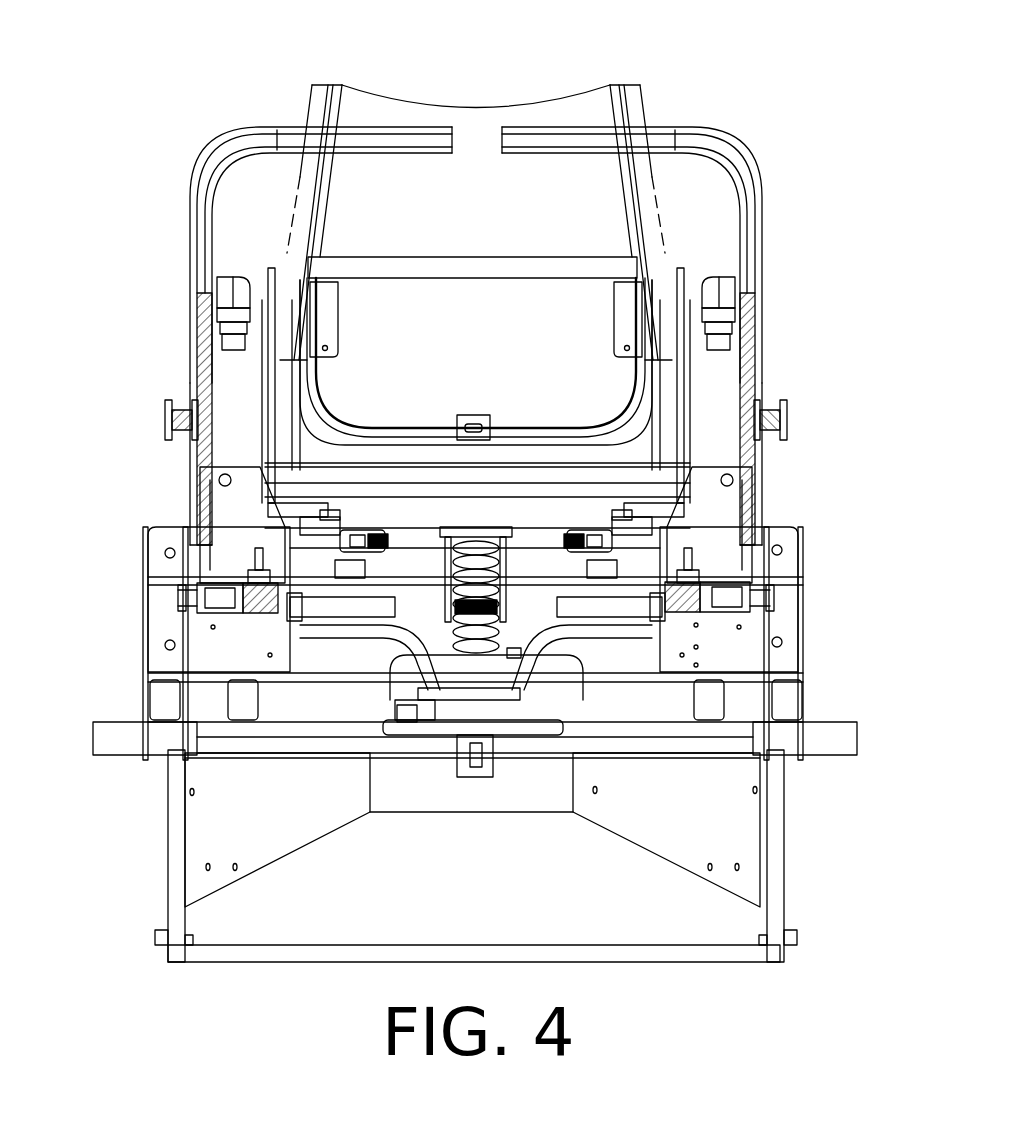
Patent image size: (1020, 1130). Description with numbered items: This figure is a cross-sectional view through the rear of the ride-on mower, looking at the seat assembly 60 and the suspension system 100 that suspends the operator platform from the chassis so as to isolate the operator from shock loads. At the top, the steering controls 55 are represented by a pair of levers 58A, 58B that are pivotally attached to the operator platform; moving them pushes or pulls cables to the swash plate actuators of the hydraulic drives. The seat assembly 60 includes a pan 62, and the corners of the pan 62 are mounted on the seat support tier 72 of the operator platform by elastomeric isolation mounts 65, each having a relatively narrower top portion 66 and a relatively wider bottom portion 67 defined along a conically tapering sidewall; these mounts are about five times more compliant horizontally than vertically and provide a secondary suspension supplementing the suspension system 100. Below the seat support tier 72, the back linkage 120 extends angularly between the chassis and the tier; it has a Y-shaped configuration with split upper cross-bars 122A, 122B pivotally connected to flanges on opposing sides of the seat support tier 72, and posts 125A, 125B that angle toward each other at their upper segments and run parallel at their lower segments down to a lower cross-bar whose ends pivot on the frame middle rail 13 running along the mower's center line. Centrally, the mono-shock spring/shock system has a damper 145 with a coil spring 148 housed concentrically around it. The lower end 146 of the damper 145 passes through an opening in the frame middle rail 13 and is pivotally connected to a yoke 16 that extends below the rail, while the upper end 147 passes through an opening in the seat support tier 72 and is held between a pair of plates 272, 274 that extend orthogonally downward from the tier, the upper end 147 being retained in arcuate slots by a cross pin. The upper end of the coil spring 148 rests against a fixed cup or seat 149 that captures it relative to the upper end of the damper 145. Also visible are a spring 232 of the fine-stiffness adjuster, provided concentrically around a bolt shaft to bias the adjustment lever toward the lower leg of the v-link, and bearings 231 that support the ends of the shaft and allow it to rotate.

The steering controls 55 is at (450, 290).
The lever 58A is at (681, 329).
The lever 58B is at (246, 336).
The seat assembly 60 is at (476, 186).
The pan 62 is at (477, 409).
The upper end 147 is at (477, 432).
The plate 274 is at (370, 460).
The spring 232 is at (475, 497).
The plate 272 is at (557, 448).
The damper 145 is at (475, 504).
The lower end 146 is at (462, 720).
The suspension system 100 is at (475, 762).
The yoke 16 is at (486, 795).
The bottom portion 67 is at (363, 641).
The frame middle rail 13 is at (532, 724).
The coil spring 148 is at (365, 749).
The cup or seat 149 is at (405, 750).
The top portion 66 is at (252, 550).
The isolation mount 65 is at (168, 585).
The upper cross-bar 122A is at (780, 599).
The upper cross-bar 122B is at (169, 620).
The bearing 231 is at (121, 643).
The seat support tier 72 is at (495, 707).
The post 125A is at (660, 783).
The post 125B is at (277, 788).
The back linkage 120 is at (474, 860).